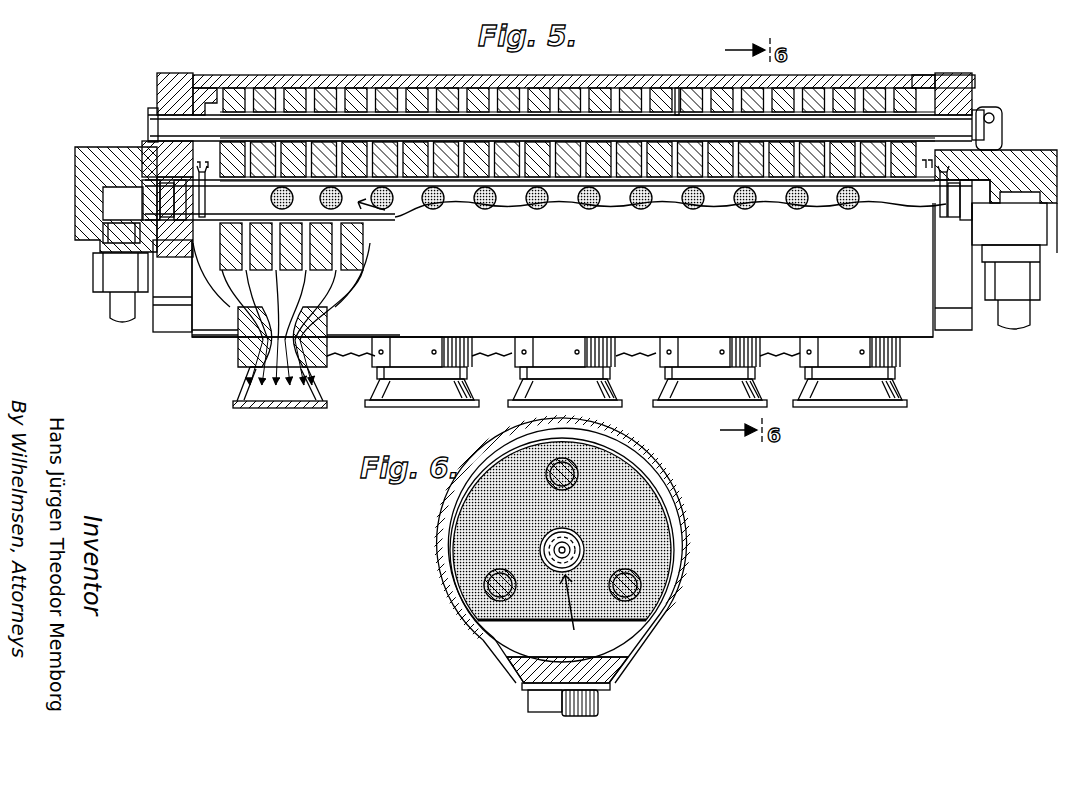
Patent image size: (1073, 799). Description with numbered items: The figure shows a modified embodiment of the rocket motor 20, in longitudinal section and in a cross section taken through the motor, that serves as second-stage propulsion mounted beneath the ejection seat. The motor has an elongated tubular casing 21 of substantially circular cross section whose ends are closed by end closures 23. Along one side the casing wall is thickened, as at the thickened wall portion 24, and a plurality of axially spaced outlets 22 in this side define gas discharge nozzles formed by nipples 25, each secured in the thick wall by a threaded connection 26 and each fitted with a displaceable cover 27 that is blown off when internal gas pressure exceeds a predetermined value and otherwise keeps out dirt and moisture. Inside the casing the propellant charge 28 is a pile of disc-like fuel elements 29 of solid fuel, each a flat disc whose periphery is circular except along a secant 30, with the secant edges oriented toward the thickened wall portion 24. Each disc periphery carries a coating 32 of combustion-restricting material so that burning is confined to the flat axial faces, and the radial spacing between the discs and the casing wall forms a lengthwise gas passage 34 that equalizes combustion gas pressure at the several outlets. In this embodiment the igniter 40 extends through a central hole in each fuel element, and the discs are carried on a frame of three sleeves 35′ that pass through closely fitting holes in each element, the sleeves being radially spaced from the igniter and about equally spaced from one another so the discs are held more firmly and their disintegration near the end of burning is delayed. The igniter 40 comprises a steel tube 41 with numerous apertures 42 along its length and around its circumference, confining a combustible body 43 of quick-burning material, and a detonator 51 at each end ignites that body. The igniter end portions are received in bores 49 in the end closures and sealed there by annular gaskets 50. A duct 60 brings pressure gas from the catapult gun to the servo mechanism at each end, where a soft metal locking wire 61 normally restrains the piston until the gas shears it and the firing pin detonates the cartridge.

In FIG. 5, the rocket motor 20 is at (905, 323).
In FIG. 6, the rocket motor 20 is at (688, 562).
In FIG. 5, the tubular casing 21 is at (363, 318).
In FIG. 6, the tubular casing 21 is at (678, 506).
In FIG. 5, the outlets 22 is at (270, 330).
In FIG. 5, the end closures 23 is at (172, 73).
In FIG. 5, the thickened wall portion 24 is at (508, 340).
In FIG. 6, the thickened wall portion 24 is at (598, 668).
In FIG. 5, the nipples 25 is at (240, 378).
In FIG. 5, the threaded connection 26 is at (248, 315).
In FIG. 5, the displaceable cover 27 is at (278, 410).
In FIG. 5, the propellant charge 28 is at (212, 88).
In FIG. 5, the disc-like fuel elements 29 is at (345, 88).
In FIG. 6, the secant 30 is at (625, 620).
In FIG. 6, the coating 32 is at (675, 542).
In FIG. 6, the gas passage 34 is at (522, 636).
In FIG. 5, the sleeves 35′ is at (677, 115).
In FIG. 6, the sleeves 35′ is at (572, 476).
In FIG. 5, the igniter 40 is at (385, 210).
In FIG. 6, the igniter 40 is at (574, 630).
In FIG. 5, the tube 41 is at (558, 197).
In FIG. 6, the tube 41 is at (540, 556).
In FIG. 5, the apertures 42 is at (487, 208).
In FIG. 5, the combustible body 43 is at (797, 208).
In FIG. 6, the combustible body 43 is at (540, 535).
In FIG. 5, the bores 49 is at (175, 240).
In FIG. 5, the annular gaskets 50 is at (157, 152).
In FIG. 5, the detonators 51 is at (202, 185).
In FIG. 5, the duct 60 is at (115, 318).
In FIG. 5, the locking wire 61 is at (190, 207).